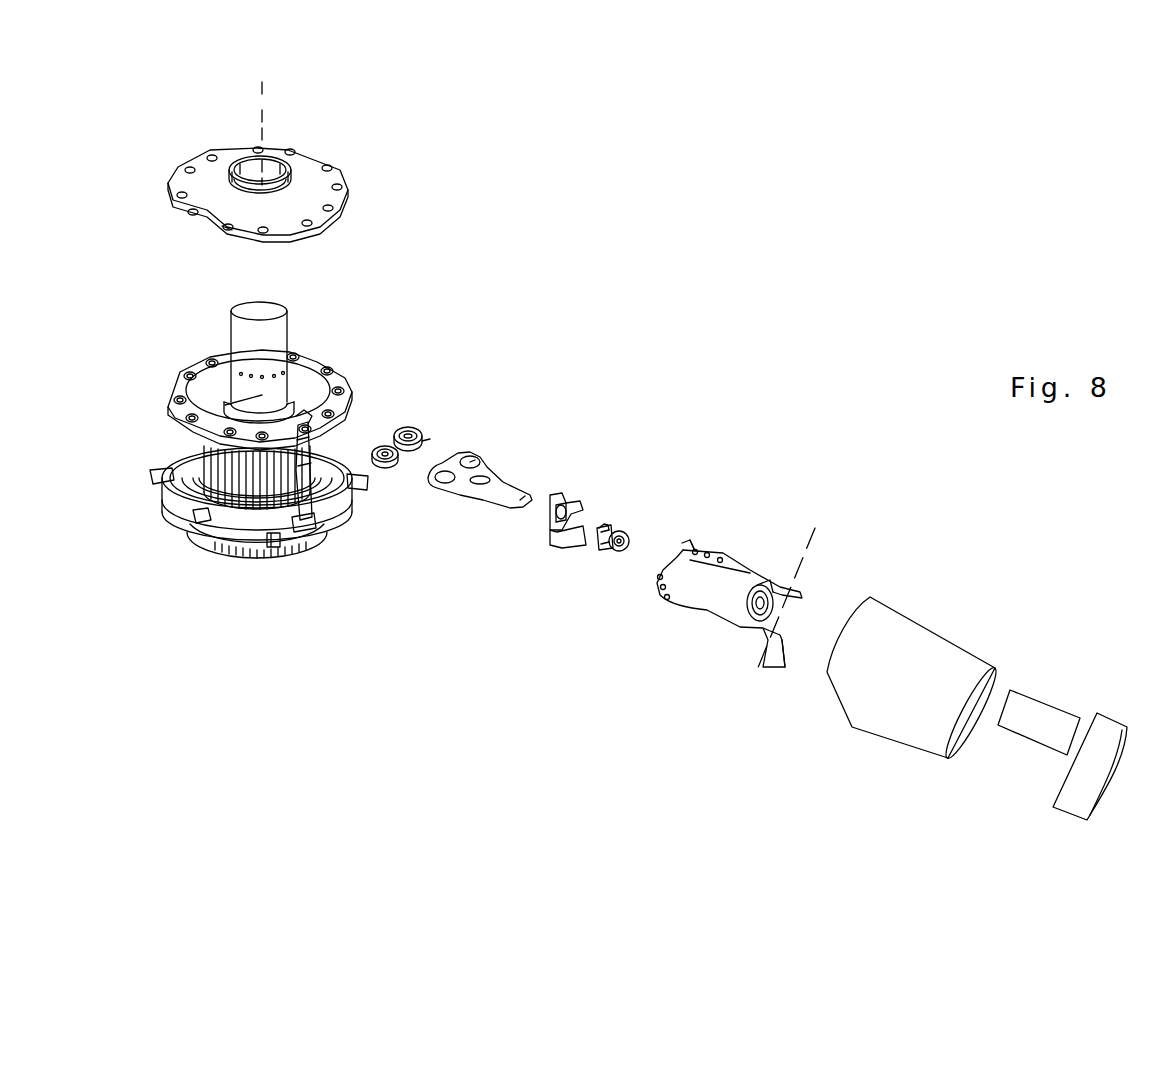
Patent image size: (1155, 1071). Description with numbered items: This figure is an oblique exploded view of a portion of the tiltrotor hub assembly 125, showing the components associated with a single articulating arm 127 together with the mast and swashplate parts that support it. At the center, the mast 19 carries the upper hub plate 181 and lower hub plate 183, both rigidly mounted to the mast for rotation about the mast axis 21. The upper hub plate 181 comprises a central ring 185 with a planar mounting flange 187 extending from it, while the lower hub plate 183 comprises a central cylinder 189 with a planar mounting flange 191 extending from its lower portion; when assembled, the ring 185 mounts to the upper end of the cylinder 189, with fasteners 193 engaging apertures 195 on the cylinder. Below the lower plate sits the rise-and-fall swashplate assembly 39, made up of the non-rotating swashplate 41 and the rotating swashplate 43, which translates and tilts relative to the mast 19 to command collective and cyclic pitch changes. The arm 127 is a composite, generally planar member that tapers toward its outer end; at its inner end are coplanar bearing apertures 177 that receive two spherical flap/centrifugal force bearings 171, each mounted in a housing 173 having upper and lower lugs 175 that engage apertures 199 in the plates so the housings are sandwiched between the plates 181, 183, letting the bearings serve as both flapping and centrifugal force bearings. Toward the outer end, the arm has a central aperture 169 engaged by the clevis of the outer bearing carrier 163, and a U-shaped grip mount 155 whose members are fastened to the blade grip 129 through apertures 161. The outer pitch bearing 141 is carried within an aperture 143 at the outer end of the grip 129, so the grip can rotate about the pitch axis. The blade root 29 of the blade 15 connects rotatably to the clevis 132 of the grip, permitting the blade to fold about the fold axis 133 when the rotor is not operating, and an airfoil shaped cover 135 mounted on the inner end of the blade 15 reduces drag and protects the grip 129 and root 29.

The blade 15 is at (1070, 795).
The mast 19 is at (240, 348).
The mast axis 21 is at (265, 118).
The blade root 29 is at (1045, 715).
The swashplate assembly 39 is at (345, 526).
The non-rotating swashplate 41 is at (233, 537).
The rotating swashplate 43 is at (183, 503).
The hub assembly 125 is at (679, 308).
The articulating arm 127 is at (514, 492).
The blade grip 129 is at (723, 617).
The clevis 132 is at (784, 668).
The fold axis 133 is at (812, 552).
The airfoil shaped cover 135 is at (920, 620).
The outer pitch bearing 141 is at (625, 532).
The aperture 143 is at (755, 595).
The grip mount 155 is at (575, 500).
The apertures 161 is at (705, 550).
The outer bearing carrier 163 is at (616, 521).
The central aperture 169 is at (478, 486).
The flap/centrifugal force bearing 171 is at (422, 441).
The housing 173 is at (388, 462).
The lugs 175 is at (410, 428).
The bearing apertures 177 is at (478, 462).
The upper hub plate 181 is at (336, 191).
The lower hub plate 183 is at (170, 388).
The central ring 185 is at (278, 162).
The planar mounting flange 187 is at (208, 172).
The central cylinder 189 is at (240, 398).
The planar mounting flange 191 is at (310, 380).
The fasteners 193 is at (232, 190).
The apertures 195 is at (283, 372).
The apertures 199 is at (223, 230).